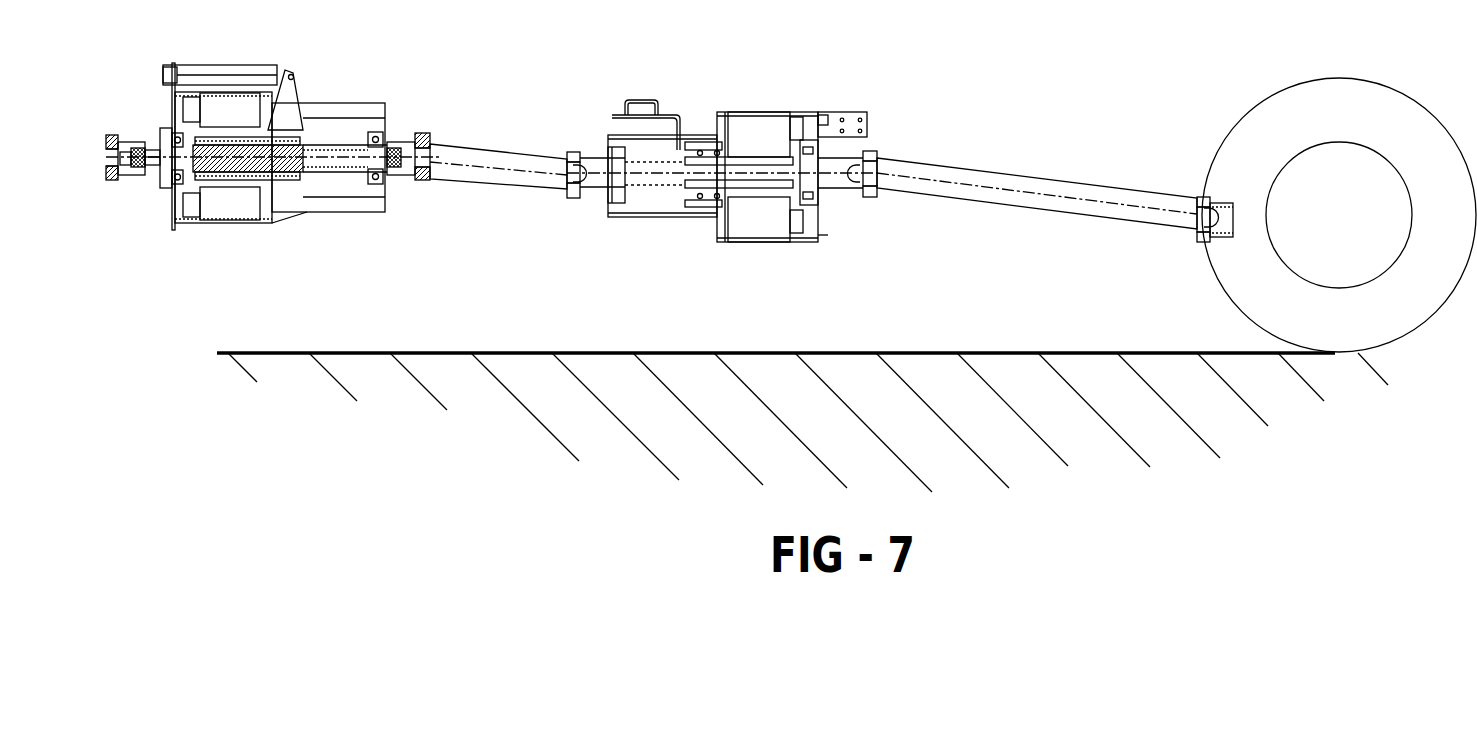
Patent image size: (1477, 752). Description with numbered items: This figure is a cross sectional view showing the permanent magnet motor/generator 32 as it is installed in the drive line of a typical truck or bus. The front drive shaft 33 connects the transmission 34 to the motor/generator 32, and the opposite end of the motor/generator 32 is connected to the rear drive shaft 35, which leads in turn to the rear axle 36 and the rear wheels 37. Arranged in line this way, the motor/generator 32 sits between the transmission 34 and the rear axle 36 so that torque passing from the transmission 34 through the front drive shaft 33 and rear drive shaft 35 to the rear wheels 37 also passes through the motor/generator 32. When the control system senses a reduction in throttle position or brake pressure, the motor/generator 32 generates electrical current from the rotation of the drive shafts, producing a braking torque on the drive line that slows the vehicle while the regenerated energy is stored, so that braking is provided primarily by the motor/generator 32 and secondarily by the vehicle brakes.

The motor/generator 32 is at (760, 113).
The front drive shaft 33 is at (475, 155).
The transmission 34 is at (339, 112).
The rear drive shaft 35 is at (992, 197).
The rear axle 36 is at (1225, 207).
The rear wheels 37 is at (1287, 347).